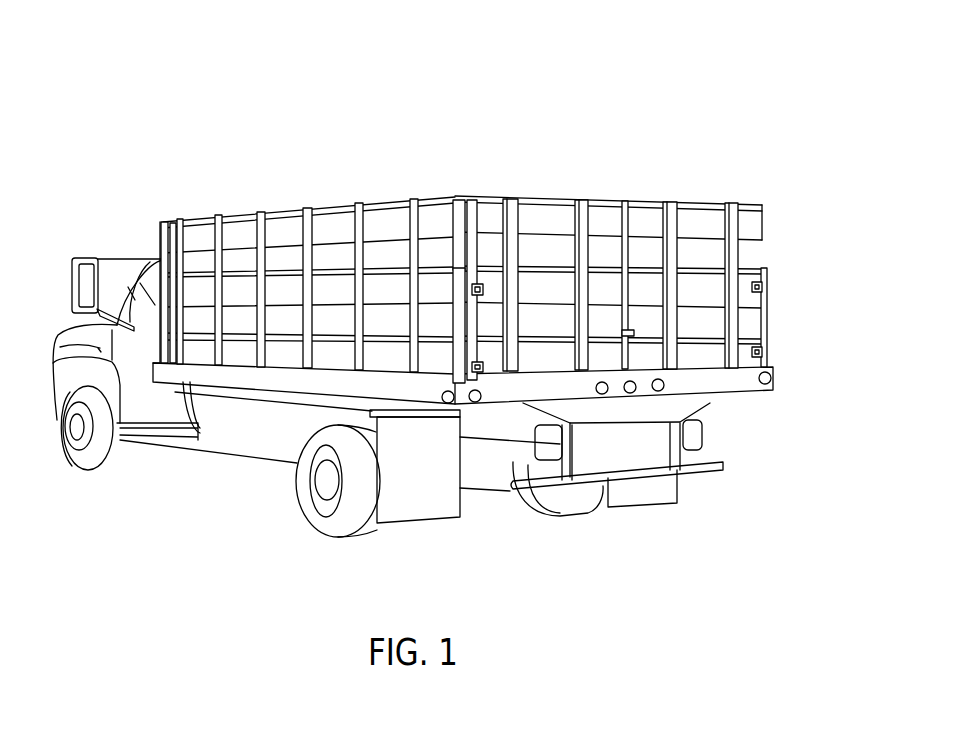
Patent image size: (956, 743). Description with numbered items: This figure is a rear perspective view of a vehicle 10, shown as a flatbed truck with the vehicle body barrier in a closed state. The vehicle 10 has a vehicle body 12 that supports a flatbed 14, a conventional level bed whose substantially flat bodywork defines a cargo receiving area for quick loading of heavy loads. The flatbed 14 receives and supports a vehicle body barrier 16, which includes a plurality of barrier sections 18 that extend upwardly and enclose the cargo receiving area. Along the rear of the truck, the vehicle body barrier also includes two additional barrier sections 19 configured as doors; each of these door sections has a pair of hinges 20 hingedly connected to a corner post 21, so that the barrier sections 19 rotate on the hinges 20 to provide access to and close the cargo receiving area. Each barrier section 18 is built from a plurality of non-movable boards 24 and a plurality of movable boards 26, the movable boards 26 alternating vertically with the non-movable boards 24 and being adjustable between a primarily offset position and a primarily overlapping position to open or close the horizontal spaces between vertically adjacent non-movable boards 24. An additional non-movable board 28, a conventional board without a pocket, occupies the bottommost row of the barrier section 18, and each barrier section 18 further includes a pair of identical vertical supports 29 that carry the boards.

The vehicle 10 is at (650, 40).
The vehicle body 12 is at (57, 333).
The flatbed 14 is at (282, 388).
The vehicle body barrier 16 is at (680, 136).
The barrier section 18 is at (368, 184).
The barrier section 19 is at (668, 183).
The hinge 20 is at (484, 366).
The corner post 21 is at (453, 386).
The non-movable board 24 is at (437, 220).
The movable board 26 is at (437, 255).
The additional non-movable board 28 is at (422, 373).
The vertical support 29 is at (173, 350).